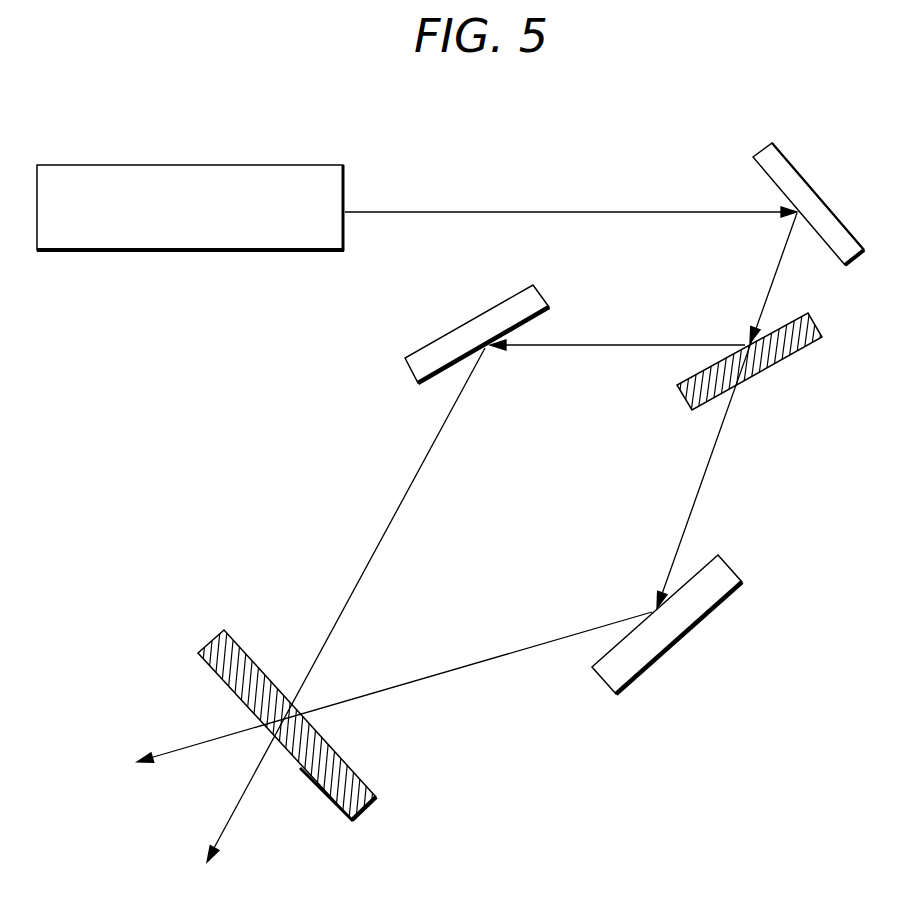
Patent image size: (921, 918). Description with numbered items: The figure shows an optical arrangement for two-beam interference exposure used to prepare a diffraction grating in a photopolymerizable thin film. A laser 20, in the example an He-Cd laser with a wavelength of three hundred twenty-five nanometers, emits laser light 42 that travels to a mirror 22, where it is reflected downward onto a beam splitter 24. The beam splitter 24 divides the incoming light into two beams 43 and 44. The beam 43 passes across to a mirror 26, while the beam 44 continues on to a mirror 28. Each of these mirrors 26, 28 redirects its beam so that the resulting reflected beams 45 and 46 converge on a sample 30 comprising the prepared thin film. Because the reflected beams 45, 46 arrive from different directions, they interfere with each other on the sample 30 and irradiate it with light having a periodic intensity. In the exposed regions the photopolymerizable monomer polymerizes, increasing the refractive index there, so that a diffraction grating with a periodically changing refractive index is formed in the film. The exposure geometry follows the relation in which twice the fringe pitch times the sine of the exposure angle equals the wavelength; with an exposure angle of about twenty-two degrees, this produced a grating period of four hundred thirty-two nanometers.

The laser 20 is at (193, 164).
The mirror 22 is at (822, 190).
The beam splitter 24 is at (814, 332).
The mirror 26 is at (470, 322).
The mirror 28 is at (690, 631).
The sample 30 is at (214, 640).
The laser light 42 is at (539, 211).
The beam 43 is at (622, 345).
The beam 44 is at (705, 478).
The reflected beam 45 is at (400, 500).
The reflected beam 46 is at (481, 663).